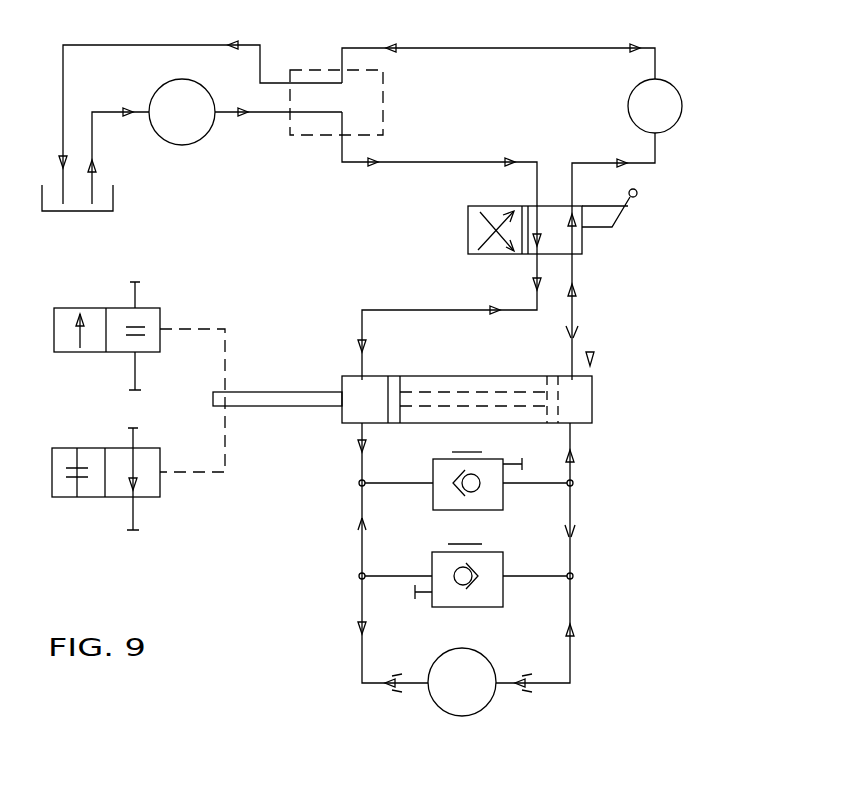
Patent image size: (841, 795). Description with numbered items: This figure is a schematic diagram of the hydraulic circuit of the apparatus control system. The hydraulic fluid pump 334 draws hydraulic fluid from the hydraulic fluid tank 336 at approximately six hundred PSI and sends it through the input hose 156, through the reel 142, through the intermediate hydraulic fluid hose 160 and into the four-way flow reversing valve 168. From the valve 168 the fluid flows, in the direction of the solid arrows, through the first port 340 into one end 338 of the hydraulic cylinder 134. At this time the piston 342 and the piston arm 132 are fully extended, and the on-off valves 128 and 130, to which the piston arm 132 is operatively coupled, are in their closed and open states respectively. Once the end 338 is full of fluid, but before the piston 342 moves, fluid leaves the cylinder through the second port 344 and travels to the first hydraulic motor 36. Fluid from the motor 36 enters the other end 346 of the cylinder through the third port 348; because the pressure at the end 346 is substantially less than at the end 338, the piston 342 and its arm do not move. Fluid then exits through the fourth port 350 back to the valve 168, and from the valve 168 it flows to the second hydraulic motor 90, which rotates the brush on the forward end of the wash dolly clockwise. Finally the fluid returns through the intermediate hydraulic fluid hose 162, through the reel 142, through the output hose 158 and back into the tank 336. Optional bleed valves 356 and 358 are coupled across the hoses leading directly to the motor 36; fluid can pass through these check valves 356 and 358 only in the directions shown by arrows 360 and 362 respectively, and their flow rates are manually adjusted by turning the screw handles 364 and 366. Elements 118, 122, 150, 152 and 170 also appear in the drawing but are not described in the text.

The first hydraulic motor 36 is at (432, 698).
The second hydraulic motor 90 is at (678, 81).
The solenoid 118 is at (138, 294).
The solenoid 122 is at (134, 516).
The on-off valve 128 is at (54, 314).
The on-off valve 130 is at (66, 498).
The piston arm 132 is at (255, 393).
The hydraulic cylinder 134 is at (591, 364).
The reel 142 is at (384, 116).
The spring return 150 is at (134, 380).
The spring return 152 is at (128, 437).
The input hose 156 is at (233, 115).
The output hose 158 is at (163, 45).
The intermediate hydraulic fluid hose 160 is at (351, 163).
The intermediate hydraulic fluid hose 162 is at (505, 48).
The four-way flow reversing valve 168 is at (492, 206).
The valve lever 170 is at (640, 207).
The hydraulic fluid pump 334 is at (170, 144).
The hydraulic fluid tank 336 is at (73, 212).
The end of hydraulic cylinder 338 is at (356, 384).
The first port 340 is at (368, 378).
The piston 342 is at (400, 392).
The second port 344 is at (360, 424).
The other end of hydraulic cylinder 346 is at (575, 398).
The third port 348 is at (573, 428).
The fourth port 350 is at (569, 376).
The bleed valve 356 is at (433, 496).
The bleed valve 358 is at (432, 566).
The arrow 360 is at (482, 452).
The arrow 362 is at (448, 544).
The screw handle 364 is at (540, 448).
The screw handle 366 is at (414, 590).